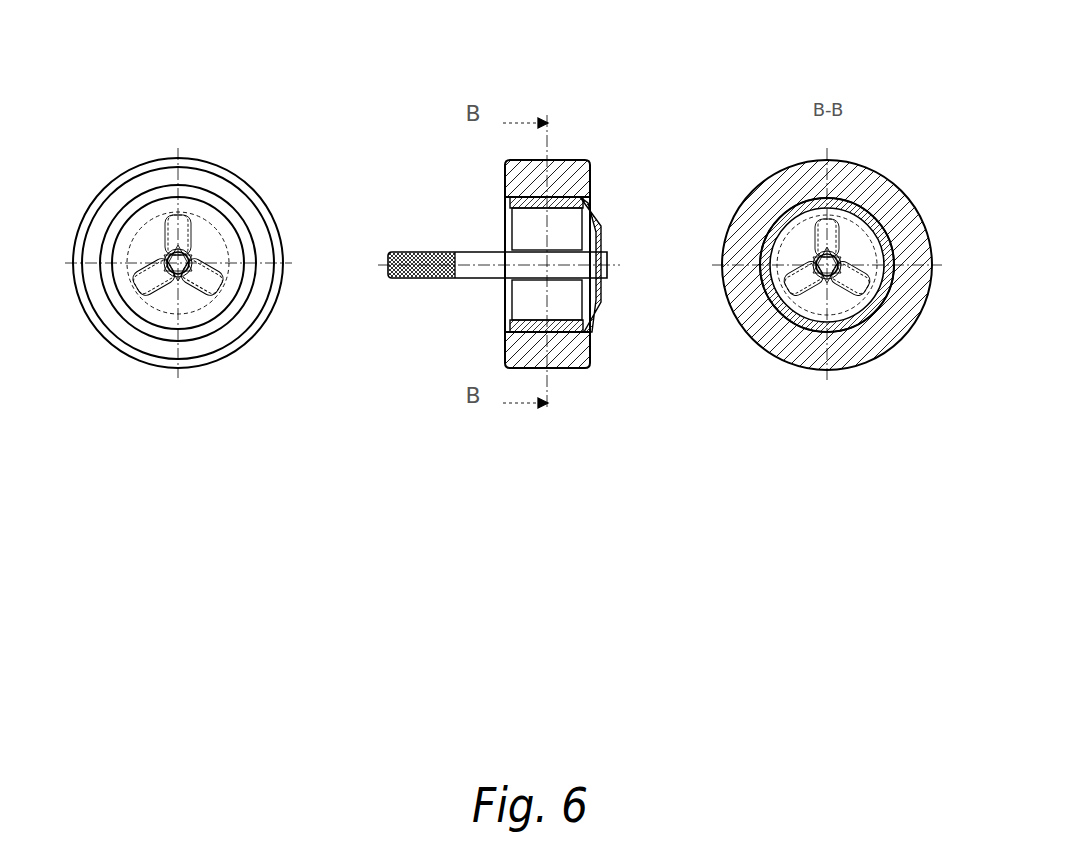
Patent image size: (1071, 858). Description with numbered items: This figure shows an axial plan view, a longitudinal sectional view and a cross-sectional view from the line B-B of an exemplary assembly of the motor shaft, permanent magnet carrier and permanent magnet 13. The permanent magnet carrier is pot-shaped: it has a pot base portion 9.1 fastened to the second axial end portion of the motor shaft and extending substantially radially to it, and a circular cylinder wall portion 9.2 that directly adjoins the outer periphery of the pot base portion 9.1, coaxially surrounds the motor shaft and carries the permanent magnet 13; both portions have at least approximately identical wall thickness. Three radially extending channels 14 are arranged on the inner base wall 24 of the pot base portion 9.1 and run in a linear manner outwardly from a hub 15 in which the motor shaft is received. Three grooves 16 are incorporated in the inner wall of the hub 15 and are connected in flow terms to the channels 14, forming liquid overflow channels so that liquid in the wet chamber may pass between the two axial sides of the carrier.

The permanent magnet 13 is at (565, 172).
The pot base portion 9.1 is at (598, 232).
The circular cylinder wall portion 9.2 is at (521, 204).
The channels 14 is at (178, 233).
The hub 15 is at (180, 262).
The grooves 16 is at (182, 245).
The inner base wall 24 is at (576, 312).